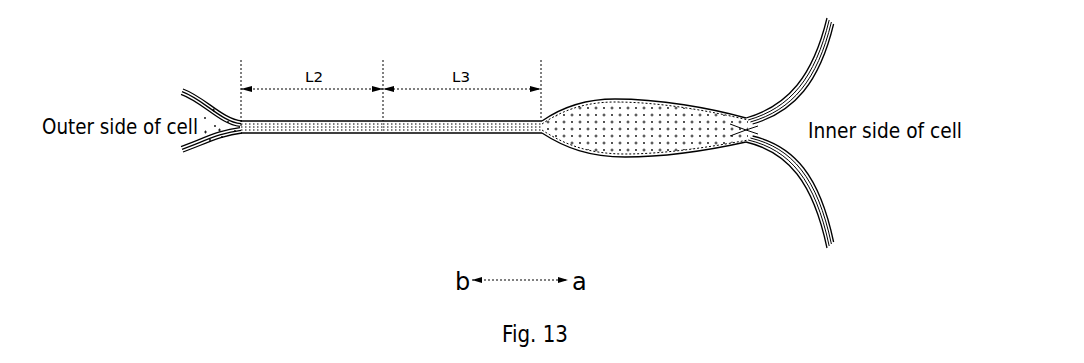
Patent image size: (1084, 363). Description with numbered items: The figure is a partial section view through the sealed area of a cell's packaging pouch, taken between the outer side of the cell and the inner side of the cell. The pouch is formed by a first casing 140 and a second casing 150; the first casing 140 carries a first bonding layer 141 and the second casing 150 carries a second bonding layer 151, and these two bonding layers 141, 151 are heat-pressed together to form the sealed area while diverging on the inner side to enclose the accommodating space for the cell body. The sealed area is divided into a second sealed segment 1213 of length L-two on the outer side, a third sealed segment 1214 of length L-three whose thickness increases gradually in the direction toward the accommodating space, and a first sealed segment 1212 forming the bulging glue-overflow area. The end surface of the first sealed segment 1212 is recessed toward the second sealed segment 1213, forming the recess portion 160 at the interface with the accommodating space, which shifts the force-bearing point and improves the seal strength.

The first casing 140 is at (827, 60).
The first bonding layer 141 is at (597, 102).
The second casing 150 is at (828, 200).
The second bonding layer 151 is at (664, 154).
The recess portion 160 is at (745, 135).
The first sealed segment 1212 is at (613, 133).
The second sealed segment 1213 is at (310, 133).
The third sealed segment 1214 is at (473, 137).